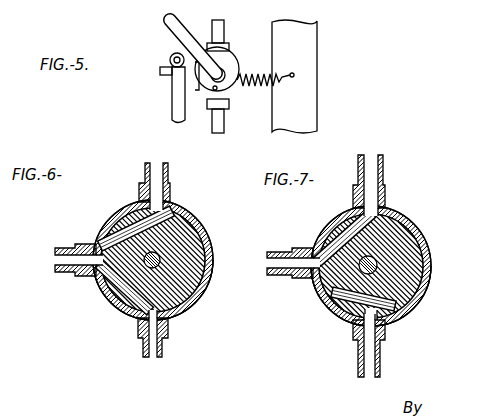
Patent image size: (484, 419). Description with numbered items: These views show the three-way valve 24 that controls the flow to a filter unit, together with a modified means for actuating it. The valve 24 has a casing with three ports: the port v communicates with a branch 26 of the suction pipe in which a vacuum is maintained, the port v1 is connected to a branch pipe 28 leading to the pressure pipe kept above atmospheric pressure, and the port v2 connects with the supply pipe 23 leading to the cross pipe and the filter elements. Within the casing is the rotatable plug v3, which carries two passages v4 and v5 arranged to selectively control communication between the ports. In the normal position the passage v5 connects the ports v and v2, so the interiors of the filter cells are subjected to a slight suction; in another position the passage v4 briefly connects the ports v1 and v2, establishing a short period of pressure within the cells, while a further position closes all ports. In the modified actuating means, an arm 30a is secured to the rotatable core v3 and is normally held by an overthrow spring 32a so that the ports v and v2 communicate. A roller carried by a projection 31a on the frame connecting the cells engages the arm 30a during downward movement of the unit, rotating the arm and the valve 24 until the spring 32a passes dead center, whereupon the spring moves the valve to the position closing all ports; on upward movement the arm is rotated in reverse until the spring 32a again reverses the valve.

In FIG. 5, the three-way valve 24 is at (233, 62).
In FIG. 6, the three-way valve 24 is at (200, 306).
In FIG. 7, the three-way valve 24 is at (416, 291).
In FIG. 5, the arm 30a is at (172, 31).
In FIG. 5, the projection 31a is at (174, 101).
In FIG. 5, the overthrow spring 32a is at (272, 76).
In FIG. 6, the branch pipe 28 is at (145, 178).
In FIG. 7, the branch pipe 28 is at (384, 172).
In FIG. 6, the branch of suction pipe 26 is at (163, 349).
In FIG. 7, the branch of suction pipe 26 is at (358, 366).
In FIG. 6, the supply pipe 23 is at (72, 250).
In FIG. 7, the supply pipe 23 is at (280, 243).
In FIG. 6, the port v is at (150, 358).
In FIG. 7, the port v is at (390, 326).
In FIG. 6, the port v1 is at (168, 182).
In FIG. 7, the port v1 is at (386, 201).
In FIG. 6, the port v2 is at (60, 262).
In FIG. 7, the port v2 is at (304, 280).
In FIG. 6, the plug v3 is at (192, 238).
In FIG. 7, the plug v3 is at (402, 241).
In FIG. 6, the passage v4 is at (172, 220).
In FIG. 7, the passage v4 is at (346, 232).
In FIG. 6, the passage v5 is at (118, 280).
In FIG. 7, the passage v5 is at (336, 301).